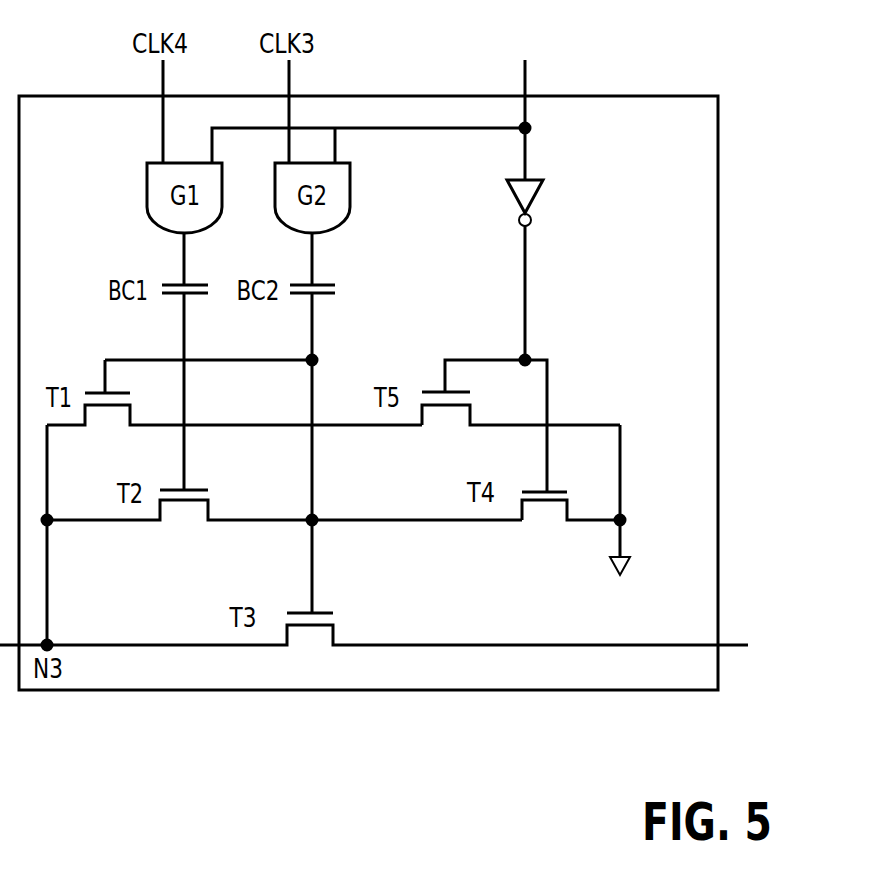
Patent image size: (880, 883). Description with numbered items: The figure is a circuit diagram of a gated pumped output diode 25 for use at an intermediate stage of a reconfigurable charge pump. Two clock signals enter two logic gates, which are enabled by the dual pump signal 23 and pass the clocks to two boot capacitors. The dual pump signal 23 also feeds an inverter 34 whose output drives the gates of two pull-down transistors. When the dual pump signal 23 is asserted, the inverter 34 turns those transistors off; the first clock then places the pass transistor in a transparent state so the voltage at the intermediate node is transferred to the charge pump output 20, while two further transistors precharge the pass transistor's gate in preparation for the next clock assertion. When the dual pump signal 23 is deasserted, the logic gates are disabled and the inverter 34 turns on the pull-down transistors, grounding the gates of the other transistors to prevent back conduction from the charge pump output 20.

The charge pump output 20 is at (748, 648).
The dual pump signal 23 is at (534, 90).
The gated pumped output diode 25 is at (664, 271).
The inverter 34 is at (545, 199).